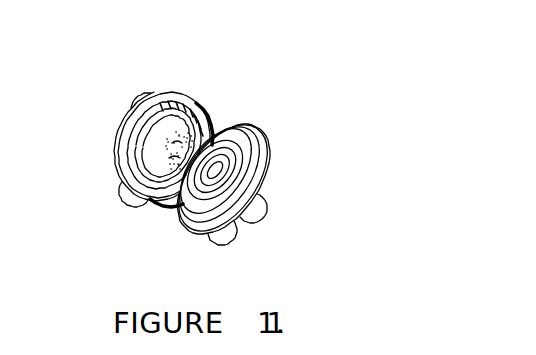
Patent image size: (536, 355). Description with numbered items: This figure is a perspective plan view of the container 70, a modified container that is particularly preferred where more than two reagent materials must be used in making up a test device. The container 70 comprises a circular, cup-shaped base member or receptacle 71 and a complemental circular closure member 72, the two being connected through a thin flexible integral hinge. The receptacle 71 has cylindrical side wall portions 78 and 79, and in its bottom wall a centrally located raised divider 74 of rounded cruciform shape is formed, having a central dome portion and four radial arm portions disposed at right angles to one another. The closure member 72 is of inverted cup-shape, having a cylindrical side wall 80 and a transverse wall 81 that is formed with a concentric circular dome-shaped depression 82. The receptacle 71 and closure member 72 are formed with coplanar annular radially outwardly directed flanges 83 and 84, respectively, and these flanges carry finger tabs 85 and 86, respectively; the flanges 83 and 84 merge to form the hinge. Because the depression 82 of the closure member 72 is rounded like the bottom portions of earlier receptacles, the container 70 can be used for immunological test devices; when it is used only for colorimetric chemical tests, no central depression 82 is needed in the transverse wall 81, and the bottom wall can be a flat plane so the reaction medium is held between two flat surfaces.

The container 70 is at (282, 117).
The receptacle 71 is at (162, 207).
The closure member 72 is at (231, 121).
The raised divider 74 is at (179, 155).
The cylindrical side wall portion 78 is at (173, 127).
The cylindrical side wall portion 79 is at (134, 159).
The cylindrical side wall 80 is at (255, 164).
The transverse wall 81 is at (207, 213).
The dome-shaped depression 82 is at (203, 197).
The flange 83 is at (188, 93).
The flange 84 is at (263, 181).
The finger tab 85 is at (148, 103).
The finger tab 86 is at (240, 230).